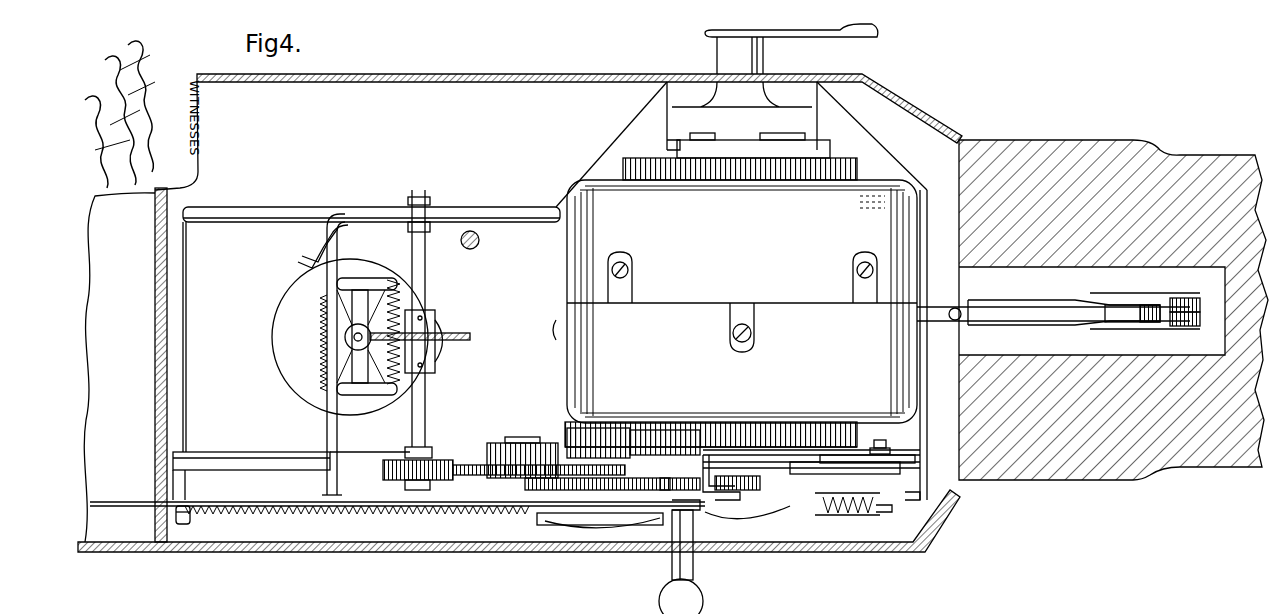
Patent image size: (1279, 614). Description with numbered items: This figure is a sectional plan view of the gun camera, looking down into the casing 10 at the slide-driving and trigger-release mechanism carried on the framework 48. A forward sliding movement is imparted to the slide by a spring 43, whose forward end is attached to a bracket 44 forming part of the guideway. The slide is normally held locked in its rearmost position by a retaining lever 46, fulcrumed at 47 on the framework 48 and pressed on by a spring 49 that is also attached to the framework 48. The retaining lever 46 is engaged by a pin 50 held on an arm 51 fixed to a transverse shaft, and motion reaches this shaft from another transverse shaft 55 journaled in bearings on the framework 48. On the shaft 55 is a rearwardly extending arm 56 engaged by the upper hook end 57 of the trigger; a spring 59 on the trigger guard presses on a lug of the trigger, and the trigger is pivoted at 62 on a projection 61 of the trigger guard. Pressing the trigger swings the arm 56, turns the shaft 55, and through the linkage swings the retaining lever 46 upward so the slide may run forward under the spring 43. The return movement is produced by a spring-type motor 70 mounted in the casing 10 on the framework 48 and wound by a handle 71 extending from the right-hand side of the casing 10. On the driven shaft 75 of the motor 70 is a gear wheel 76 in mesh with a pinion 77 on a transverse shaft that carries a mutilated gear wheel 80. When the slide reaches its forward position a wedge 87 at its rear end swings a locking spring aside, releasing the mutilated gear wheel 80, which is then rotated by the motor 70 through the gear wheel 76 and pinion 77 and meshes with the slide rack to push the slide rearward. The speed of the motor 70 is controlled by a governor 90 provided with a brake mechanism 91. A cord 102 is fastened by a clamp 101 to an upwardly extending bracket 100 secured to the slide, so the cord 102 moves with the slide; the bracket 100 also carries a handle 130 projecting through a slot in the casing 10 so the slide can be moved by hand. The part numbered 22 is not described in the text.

The casing 10 is at (420, 560).
The supporting block 22 is at (1195, 166).
The spring 43 is at (286, 517).
The bracket 44 is at (190, 520).
The retaining lever 46 is at (838, 517).
The fulcrum 47 is at (806, 497).
The framework 48 is at (904, 156).
The spring 49 is at (730, 502).
The pin 50 is at (860, 512).
The arm 51 is at (922, 466).
The transverse shaft 55 is at (886, 433).
The rearwardly extending arm 56 is at (1033, 307).
The upper hook end 57 is at (1117, 323).
The spring 59 is at (1037, 322).
The projection 61 is at (1184, 303).
The trigger pivot 62 is at (1183, 327).
The motor 70 is at (735, 252).
The handle 71 is at (808, 33).
The driven shaft 75 is at (760, 430).
The gear wheel 76 is at (722, 430).
The pinion 77 is at (570, 434).
The mutilated gear wheel 80 is at (600, 480).
The wedge 87 is at (919, 497).
The governor 90 is at (388, 283).
The brake mechanism 91 is at (308, 266).
The bracket 100 is at (628, 522).
The clamp 101 is at (692, 516).
The cord 102 is at (92, 506).
The handle 130 is at (694, 574).